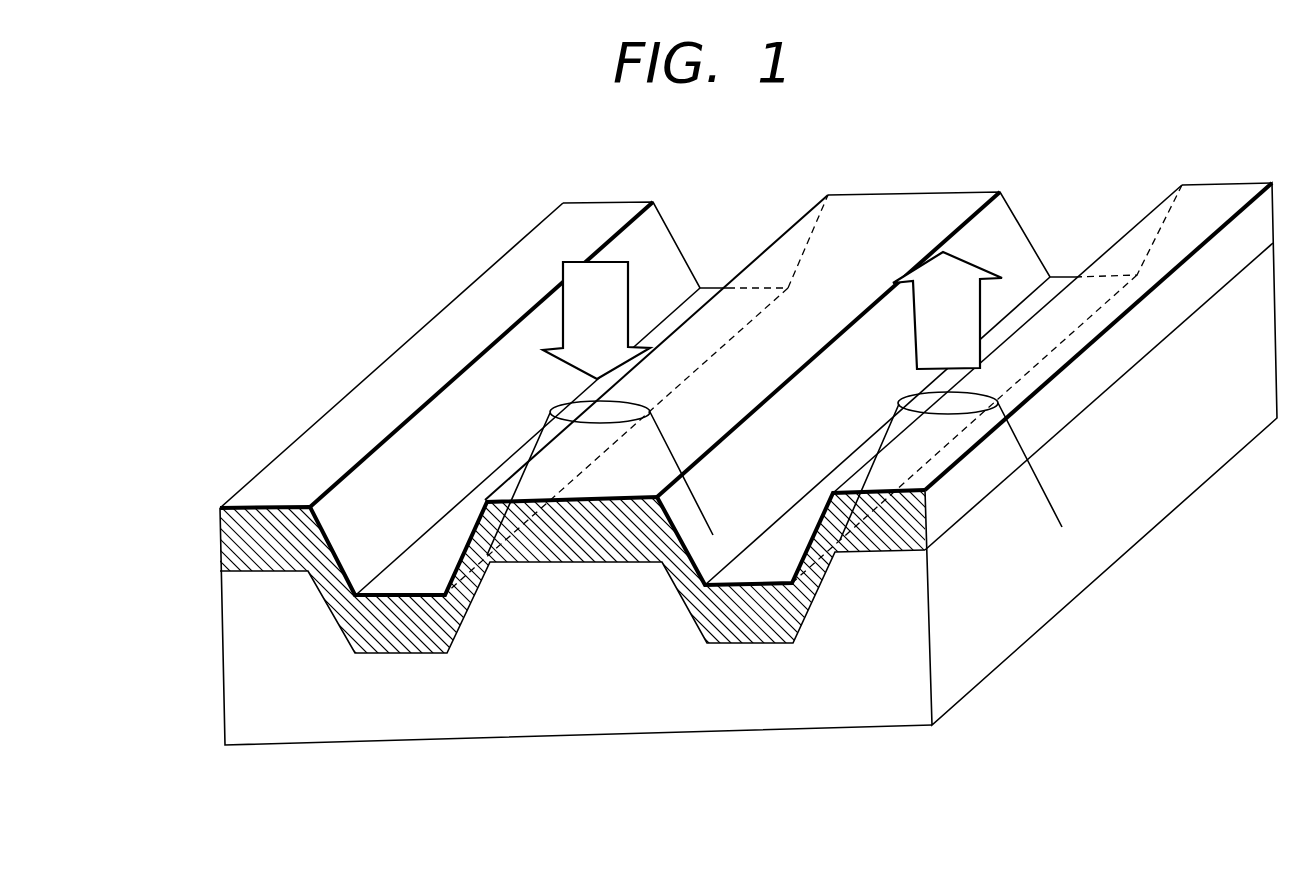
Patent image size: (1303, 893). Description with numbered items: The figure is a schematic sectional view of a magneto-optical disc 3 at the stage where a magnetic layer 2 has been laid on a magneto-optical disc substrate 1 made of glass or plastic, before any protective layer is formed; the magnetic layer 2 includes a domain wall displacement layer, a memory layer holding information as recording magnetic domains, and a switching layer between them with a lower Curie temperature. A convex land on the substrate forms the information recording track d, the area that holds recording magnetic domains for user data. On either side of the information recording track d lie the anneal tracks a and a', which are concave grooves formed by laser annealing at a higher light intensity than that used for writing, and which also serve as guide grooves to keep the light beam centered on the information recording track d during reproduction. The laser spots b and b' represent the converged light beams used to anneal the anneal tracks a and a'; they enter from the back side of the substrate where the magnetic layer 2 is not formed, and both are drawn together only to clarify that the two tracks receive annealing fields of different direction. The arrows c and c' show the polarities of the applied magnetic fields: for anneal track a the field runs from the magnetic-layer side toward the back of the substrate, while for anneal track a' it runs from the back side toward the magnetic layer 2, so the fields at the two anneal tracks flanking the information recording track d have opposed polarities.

The magneto-optical disc substrate 1 is at (235, 662).
The magnetic layer 2 is at (230, 540).
The magneto-optical disc 3 is at (1085, 643).
The anneal track a is at (490, 441).
The anneal track a' is at (943, 504).
The laser spot b is at (553, 372).
The laser spot b' is at (1069, 466).
The polarity of applied magnetic field c is at (621, 271).
The polarity of applied magnetic field c' is at (978, 266).
The information recording track d is at (585, 628).